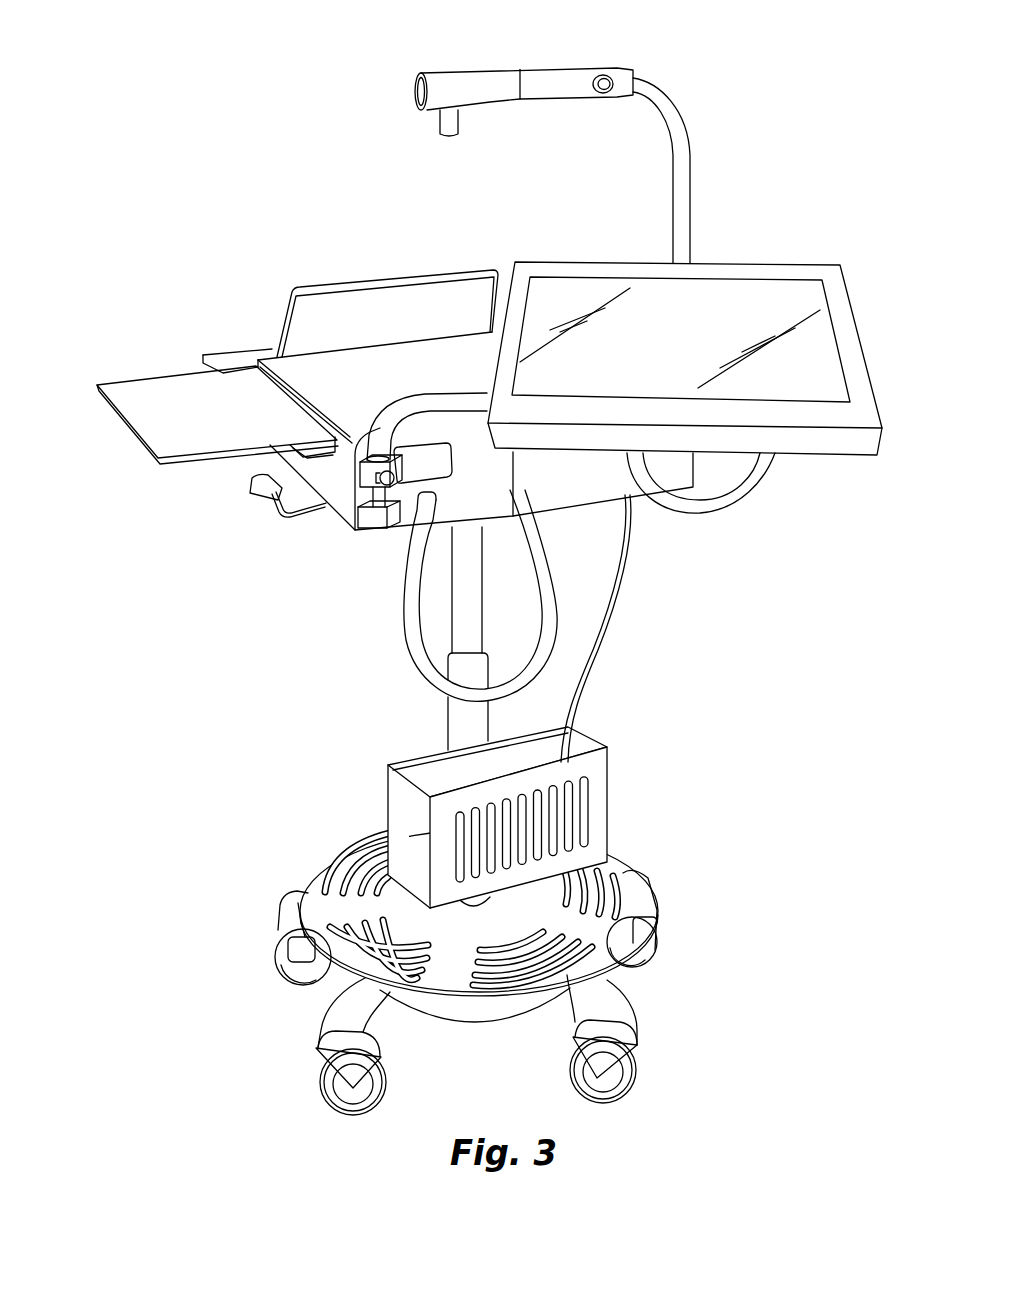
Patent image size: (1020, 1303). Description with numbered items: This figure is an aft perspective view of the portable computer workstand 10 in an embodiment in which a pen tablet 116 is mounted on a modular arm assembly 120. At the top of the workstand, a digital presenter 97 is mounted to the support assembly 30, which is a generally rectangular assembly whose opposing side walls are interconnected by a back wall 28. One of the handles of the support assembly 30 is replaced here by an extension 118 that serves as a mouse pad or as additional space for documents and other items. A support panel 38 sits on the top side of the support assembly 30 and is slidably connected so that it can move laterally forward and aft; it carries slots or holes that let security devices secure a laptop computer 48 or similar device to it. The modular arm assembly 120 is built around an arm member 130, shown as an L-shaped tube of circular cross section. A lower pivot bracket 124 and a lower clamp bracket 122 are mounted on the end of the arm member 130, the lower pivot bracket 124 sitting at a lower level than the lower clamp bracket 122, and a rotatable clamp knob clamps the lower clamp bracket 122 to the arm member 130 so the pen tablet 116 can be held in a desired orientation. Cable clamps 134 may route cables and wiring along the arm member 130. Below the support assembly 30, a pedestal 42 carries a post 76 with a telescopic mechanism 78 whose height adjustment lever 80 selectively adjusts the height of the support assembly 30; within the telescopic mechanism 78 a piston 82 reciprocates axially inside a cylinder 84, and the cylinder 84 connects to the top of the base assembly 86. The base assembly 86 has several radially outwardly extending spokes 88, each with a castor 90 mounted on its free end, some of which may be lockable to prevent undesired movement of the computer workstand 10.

The computer workstand 10 is at (796, 157).
The digital presenter 97 is at (552, 64).
The support assembly 30 is at (124, 353).
The laptop computer 48 is at (398, 324).
The support panel 38 is at (365, 417).
The extension 118 is at (148, 423).
The back wall 28 is at (583, 487).
The pen tablet 116 is at (700, 349).
The modular arm assembly 120 is at (400, 390).
The arm member 130 is at (452, 394).
The lower clamp bracket 122 is at (360, 478).
The cable clamps 134 is at (385, 483).
The lower pivot bracket 124 is at (384, 527).
The height adjustment lever 80 is at (273, 508).
The piston 82 is at (483, 573).
The telescopic mechanism 78 is at (452, 657).
The cylinder 84 is at (452, 722).
The post 76 is at (384, 634).
The pedestal 42 is at (642, 592).
The base assembly 86 is at (718, 947).
The spokes 88 is at (290, 908).
The castor 90 is at (320, 1100).